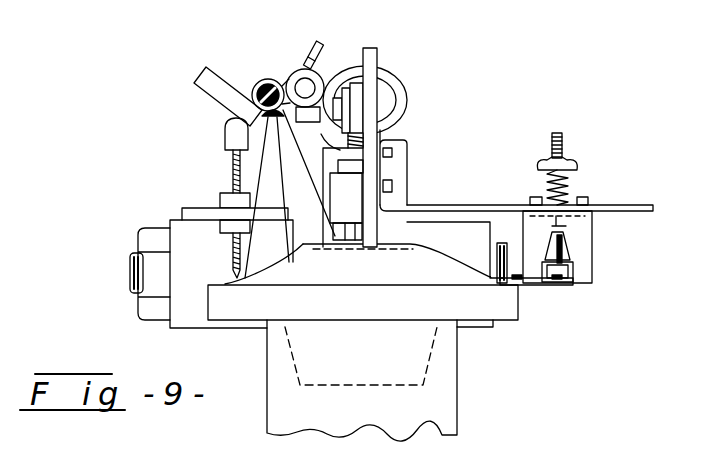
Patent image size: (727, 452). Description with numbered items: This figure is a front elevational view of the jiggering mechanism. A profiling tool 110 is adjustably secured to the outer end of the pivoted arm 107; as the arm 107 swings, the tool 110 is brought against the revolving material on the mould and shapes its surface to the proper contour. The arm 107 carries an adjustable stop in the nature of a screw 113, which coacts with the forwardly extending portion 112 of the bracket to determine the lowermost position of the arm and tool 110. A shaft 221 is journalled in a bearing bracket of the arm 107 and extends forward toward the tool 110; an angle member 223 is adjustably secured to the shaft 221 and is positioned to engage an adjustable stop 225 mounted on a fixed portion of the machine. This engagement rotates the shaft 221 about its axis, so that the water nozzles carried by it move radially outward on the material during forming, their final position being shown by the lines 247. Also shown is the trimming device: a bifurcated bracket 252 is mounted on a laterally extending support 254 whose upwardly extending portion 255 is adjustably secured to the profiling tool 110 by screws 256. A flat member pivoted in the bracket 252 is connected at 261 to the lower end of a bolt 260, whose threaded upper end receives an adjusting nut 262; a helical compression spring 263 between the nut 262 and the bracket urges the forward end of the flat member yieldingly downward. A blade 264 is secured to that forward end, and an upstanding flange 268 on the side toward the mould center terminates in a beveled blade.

The arm 107 is at (388, 78).
The profiling tool 110 is at (357, 245).
The forwardly extending portion 112 is at (347, 190).
The screw 113 is at (333, 148).
The shaft 221 is at (306, 84).
The angle member 223 is at (210, 93).
The adjustable stop 225 is at (225, 147).
The lines 247 is at (300, 152).
The bifurcated bracket 252 is at (580, 228).
The laterally extending support 254 is at (478, 187).
The upwardly extending portion 255 is at (392, 166).
The screws 256 is at (392, 153).
The bolt 260 is at (563, 248).
The pivotal connection 261 is at (568, 268).
The adjusting nut 262 is at (567, 157).
The helical compression spring 263 is at (560, 175).
The blade 264 is at (627, 303).
The upstanding flange 268 is at (507, 242).